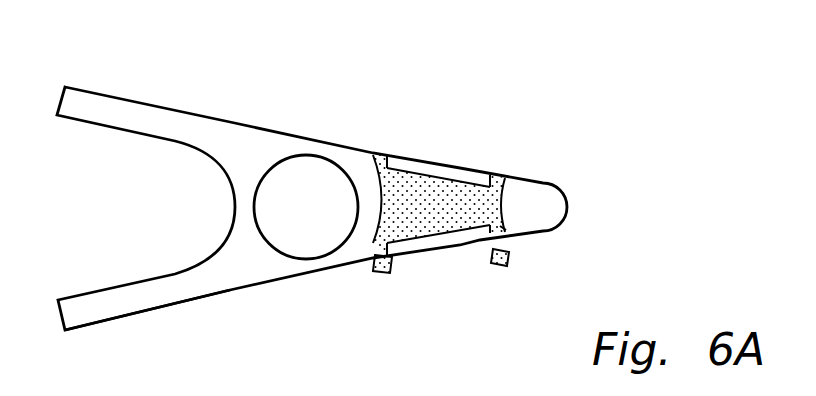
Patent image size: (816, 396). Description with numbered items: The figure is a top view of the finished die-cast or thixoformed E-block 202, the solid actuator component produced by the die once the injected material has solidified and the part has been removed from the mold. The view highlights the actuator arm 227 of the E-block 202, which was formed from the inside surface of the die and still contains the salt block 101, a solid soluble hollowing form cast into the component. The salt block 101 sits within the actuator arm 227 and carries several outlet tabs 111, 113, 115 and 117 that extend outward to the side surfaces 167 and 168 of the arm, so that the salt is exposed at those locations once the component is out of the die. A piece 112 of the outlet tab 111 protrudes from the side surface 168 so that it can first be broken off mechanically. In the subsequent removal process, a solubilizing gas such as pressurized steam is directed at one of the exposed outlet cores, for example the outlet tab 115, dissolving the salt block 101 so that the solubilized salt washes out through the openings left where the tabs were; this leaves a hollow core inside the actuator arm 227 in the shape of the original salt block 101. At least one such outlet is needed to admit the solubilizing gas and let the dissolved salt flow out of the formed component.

The E-block 202 is at (327, 179).
The actuator arm 227 is at (237, 153).
The side surface 167 is at (273, 133).
The side surface 168 is at (312, 272).
The outlet tab 117 is at (380, 155).
The salt block 101 is at (435, 200).
The outlet tab 115 is at (500, 178).
The outlet tab 111 is at (510, 227).
The outlet tab 113 is at (393, 253).
The piece of outlet tab 112 is at (498, 267).